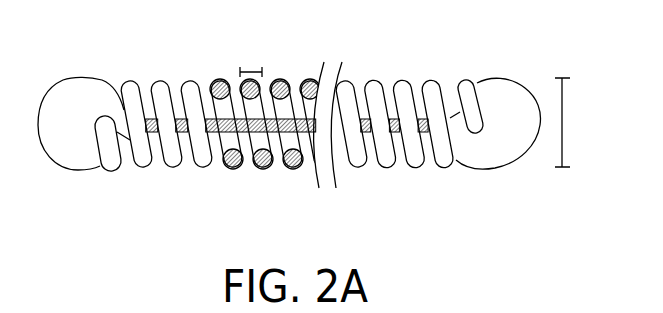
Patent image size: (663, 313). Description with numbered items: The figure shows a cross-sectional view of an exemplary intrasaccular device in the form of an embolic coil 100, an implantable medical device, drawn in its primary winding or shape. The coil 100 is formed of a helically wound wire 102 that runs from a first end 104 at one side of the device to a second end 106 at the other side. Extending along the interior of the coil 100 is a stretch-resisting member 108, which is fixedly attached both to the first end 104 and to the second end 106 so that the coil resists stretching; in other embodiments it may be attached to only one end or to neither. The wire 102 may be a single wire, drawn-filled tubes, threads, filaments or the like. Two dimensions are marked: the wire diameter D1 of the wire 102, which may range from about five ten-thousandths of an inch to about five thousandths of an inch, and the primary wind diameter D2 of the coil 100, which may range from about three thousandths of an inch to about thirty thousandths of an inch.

The embolic coil 100 is at (404, 48).
The helically wound wire 102 is at (193, 80).
The first end 104 is at (70, 97).
The second end 106 is at (513, 82).
The stretch-resisting member 108 is at (290, 165).
The wire diameter D1 is at (252, 56).
The primary wind diameter D2 is at (580, 122).